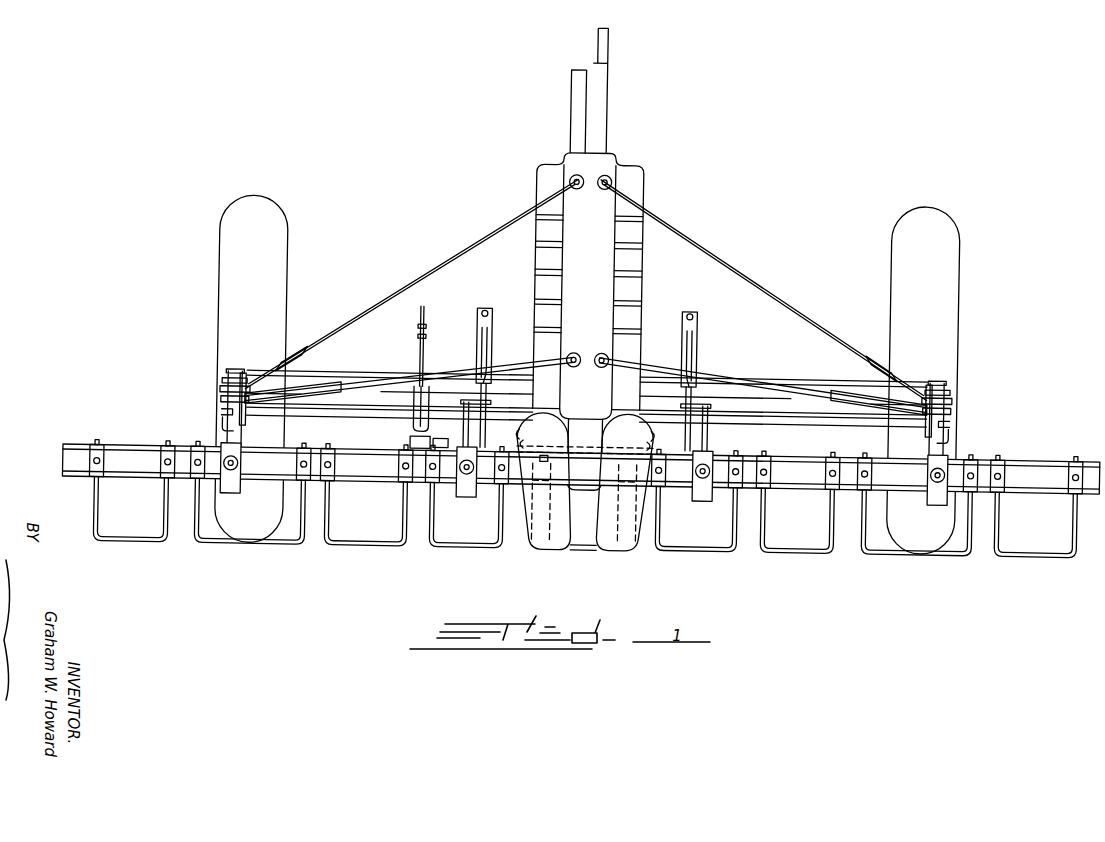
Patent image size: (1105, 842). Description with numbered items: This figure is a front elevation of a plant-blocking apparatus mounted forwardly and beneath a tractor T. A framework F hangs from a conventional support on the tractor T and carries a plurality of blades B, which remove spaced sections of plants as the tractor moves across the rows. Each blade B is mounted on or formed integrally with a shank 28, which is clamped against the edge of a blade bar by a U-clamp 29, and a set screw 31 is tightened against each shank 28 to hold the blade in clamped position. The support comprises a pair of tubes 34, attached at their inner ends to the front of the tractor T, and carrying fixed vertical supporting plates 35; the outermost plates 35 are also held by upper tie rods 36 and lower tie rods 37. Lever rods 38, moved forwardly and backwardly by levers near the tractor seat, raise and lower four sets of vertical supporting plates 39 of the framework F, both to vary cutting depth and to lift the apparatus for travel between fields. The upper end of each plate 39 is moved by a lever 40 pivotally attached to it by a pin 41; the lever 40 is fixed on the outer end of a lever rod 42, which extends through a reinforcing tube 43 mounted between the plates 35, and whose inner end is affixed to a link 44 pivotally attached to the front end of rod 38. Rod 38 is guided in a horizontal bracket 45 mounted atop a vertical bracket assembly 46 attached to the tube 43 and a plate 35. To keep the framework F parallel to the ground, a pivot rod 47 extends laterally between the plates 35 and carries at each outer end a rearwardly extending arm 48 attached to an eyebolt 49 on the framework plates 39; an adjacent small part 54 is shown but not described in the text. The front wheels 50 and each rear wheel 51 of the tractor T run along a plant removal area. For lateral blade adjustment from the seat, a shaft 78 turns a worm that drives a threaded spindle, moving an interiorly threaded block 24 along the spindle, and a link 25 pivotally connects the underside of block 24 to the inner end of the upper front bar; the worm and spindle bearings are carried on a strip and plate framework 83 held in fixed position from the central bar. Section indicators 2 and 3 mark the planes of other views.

The framework F is at (555, 468).
The tractor T is at (645, 172).
The blades B is at (585, 532).
The section line 2 is at (132, 430).
The section line 3 is at (950, 316).
The interiorly threaded block 24 is at (440, 431).
The link 25 is at (540, 453).
The shank 28 is at (834, 521).
The U-clamp 29 is at (778, 457).
The set screw 31 is at (830, 466).
The tubes 34 is at (385, 406).
The fixed supporting plates 35 is at (249, 412).
The upper tie rods 36 is at (455, 240).
The lower tie rods 37 is at (459, 364).
The lever rods 38 is at (490, 300).
The vertical supporting plates 39 is at (245, 435).
The lever 40 is at (221, 373).
The pin 41 is at (217, 369).
The lever rod 42 is at (233, 370).
The reinforcing tube 43 is at (344, 367).
The link 44 is at (491, 338).
The horizontal bracket 45 is at (476, 299).
The vertical bracket assembly 46 is at (475, 334).
The pivot rod 47 is at (337, 414).
The rearwardly extending arm 48 is at (219, 408).
The eyebolt 49 is at (215, 426).
The front wheels 50 is at (612, 515).
The rear wheel 51 is at (278, 224).
The collar 54 is at (221, 391).
The shaft 78 is at (418, 325).
The strip and plate framework 83 is at (411, 400).